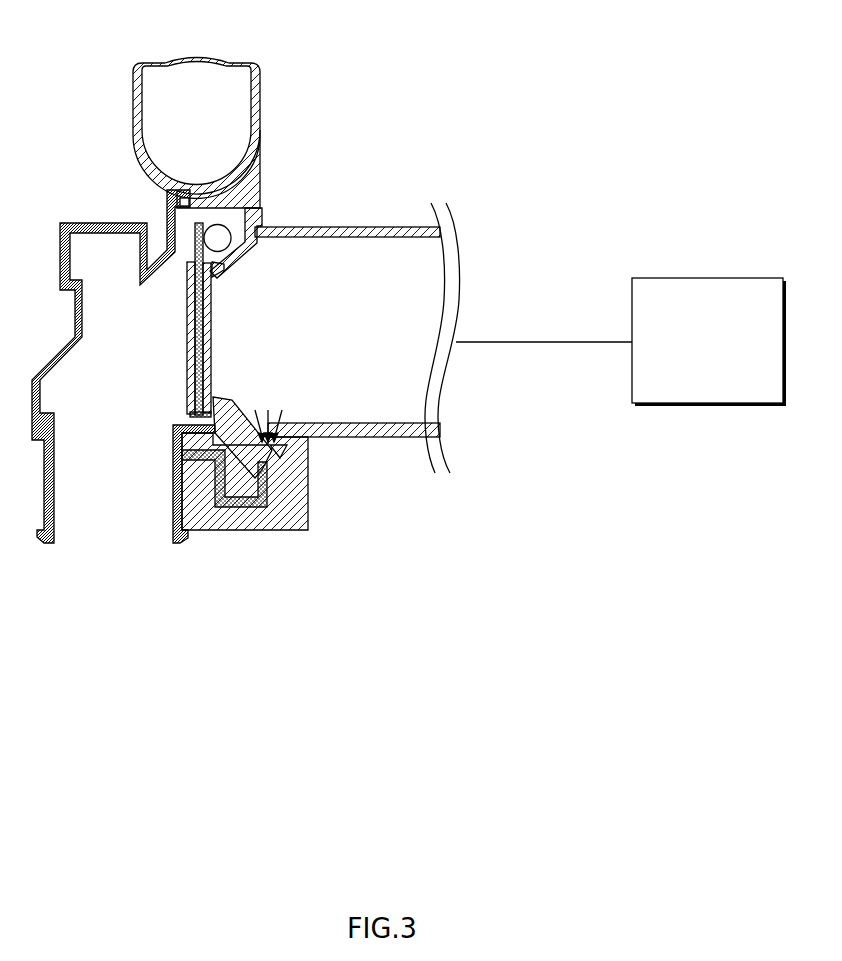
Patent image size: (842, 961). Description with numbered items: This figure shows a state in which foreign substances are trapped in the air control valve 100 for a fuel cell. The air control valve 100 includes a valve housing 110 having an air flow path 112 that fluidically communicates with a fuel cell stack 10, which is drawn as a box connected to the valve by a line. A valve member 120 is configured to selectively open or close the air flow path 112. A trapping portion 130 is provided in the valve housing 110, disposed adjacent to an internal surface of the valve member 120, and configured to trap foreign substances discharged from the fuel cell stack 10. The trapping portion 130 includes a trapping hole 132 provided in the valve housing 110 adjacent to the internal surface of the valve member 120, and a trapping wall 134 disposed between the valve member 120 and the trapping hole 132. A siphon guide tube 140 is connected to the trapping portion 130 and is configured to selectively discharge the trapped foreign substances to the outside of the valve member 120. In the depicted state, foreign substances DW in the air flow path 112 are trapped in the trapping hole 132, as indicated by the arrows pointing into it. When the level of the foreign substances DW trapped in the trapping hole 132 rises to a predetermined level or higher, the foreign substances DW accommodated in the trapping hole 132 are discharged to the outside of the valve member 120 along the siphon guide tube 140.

The air control valve 100 is at (90, 30).
The valve housing 110 is at (118, 224).
The air flow path 112 is at (223, 335).
The valve member 120 is at (211, 317).
The trapping portion 130 is at (215, 413).
The trapping hole 132 is at (272, 447).
The trapping wall 134 is at (241, 425).
The siphon guide tube 140 is at (268, 502).
The foreign substances DW is at (272, 469).
The fuel cell stack 10 is at (710, 404).